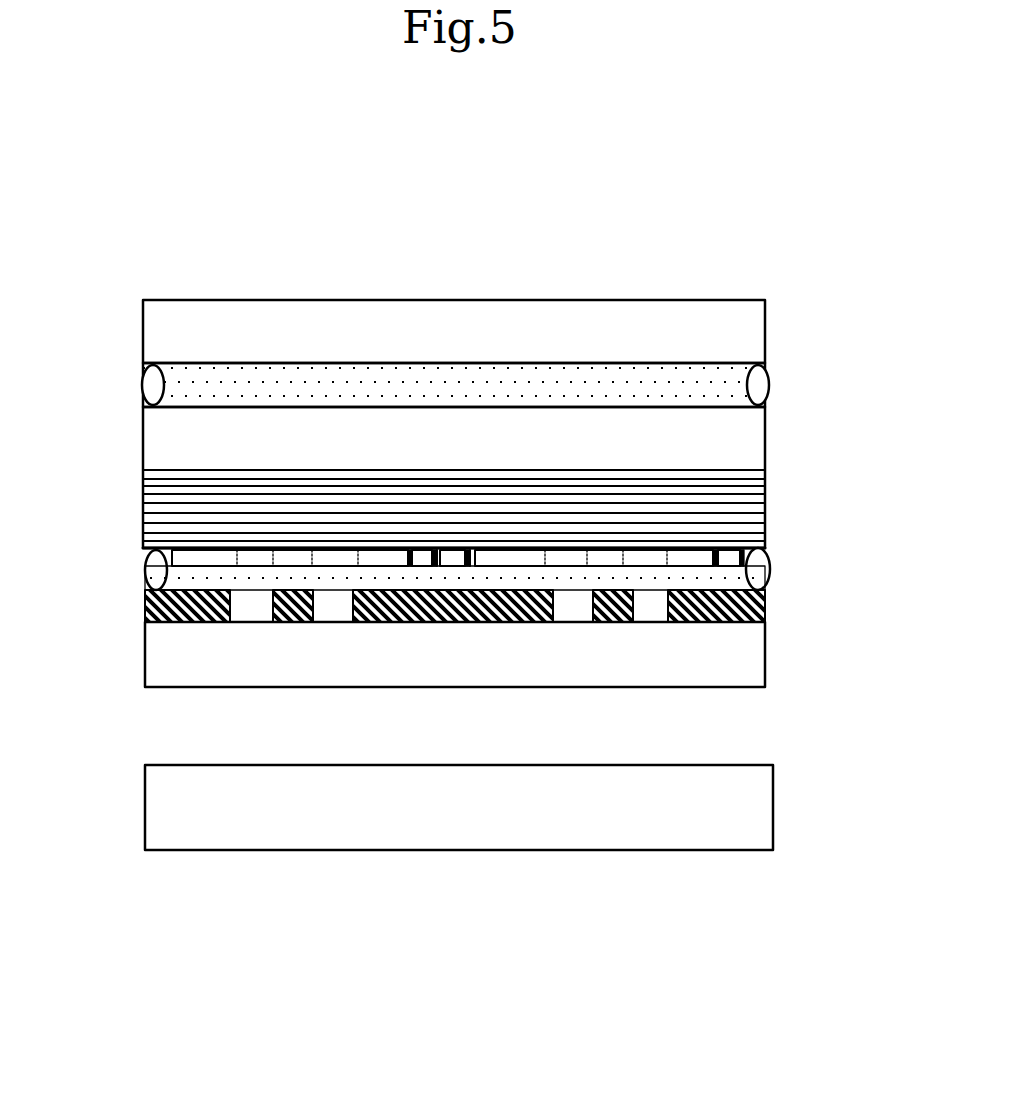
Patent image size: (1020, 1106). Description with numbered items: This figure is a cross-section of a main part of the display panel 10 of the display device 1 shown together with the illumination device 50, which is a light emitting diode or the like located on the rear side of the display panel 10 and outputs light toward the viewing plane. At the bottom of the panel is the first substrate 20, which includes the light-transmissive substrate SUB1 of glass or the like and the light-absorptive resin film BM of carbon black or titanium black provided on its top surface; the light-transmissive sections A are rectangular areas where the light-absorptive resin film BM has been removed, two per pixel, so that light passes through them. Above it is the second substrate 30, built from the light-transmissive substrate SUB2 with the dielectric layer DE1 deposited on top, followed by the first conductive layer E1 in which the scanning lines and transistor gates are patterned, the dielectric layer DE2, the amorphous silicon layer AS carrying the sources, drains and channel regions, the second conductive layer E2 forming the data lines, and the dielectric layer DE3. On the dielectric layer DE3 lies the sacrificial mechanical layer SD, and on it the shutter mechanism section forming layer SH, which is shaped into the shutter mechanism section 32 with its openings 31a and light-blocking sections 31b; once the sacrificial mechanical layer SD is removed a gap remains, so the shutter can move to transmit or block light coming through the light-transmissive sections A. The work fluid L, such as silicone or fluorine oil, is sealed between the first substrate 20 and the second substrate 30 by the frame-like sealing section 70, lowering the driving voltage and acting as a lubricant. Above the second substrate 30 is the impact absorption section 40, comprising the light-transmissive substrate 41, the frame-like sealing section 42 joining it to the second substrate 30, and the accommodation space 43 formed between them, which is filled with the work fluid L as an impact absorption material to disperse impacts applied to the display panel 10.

The display device 1 is at (452, 178).
The display panel 10 is at (80, 285).
The first substrate 20 is at (128, 592).
The second substrate 30 is at (128, 408).
The impact absorption section 40 is at (128, 295).
The light-transmissive substrate 41 is at (630, 320).
The sealing section 42 is at (152, 382).
The accommodation space 43 is at (403, 395).
The illumination device 50 is at (655, 837).
The sealing section 70 is at (145, 570).
The openings 31a is at (344, 560).
The light-blocking sections 31b is at (378, 560).
The shutter mechanism section 32 is at (556, 556).
The work fluid L is at (307, 387).
The light-transmissive sections A is at (333, 620).
The light-absorptive resin film BM is at (437, 624).
The light-transmissive substrate SUB1 is at (535, 657).
The light-transmissive substrate SUB2 is at (737, 437).
The dielectric layer DE1 is at (737, 473).
The first conductive layer E1 is at (737, 483).
The dielectric layer DE2 is at (737, 498).
The amorphous silicon layer AS is at (737, 508).
The second conductive layer E2 is at (737, 538).
The dielectric layer DE3 is at (737, 553).
The sacrificial mechanical layer SD is at (750, 581).
The shutter mechanism section forming layer SH is at (815, 659).